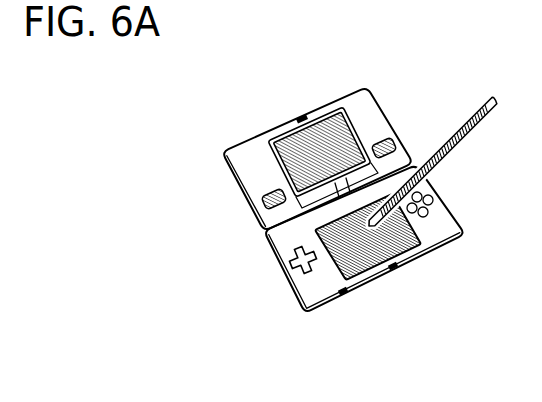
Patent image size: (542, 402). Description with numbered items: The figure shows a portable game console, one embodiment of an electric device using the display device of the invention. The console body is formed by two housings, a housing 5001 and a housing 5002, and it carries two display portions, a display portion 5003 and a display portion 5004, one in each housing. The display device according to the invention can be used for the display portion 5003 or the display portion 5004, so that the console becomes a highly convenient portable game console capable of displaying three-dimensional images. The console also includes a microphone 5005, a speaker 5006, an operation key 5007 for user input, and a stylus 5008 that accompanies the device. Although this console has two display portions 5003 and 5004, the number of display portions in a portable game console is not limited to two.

The housing 5001 is at (303, 296).
The housing 5002 is at (247, 180).
The display portion 5003 is at (372, 268).
The display portion 5004 is at (300, 146).
The microphone 5005 is at (343, 296).
The speaker 5006 is at (388, 138).
The operation key 5007 is at (290, 268).
The stylus 5008 is at (468, 117).